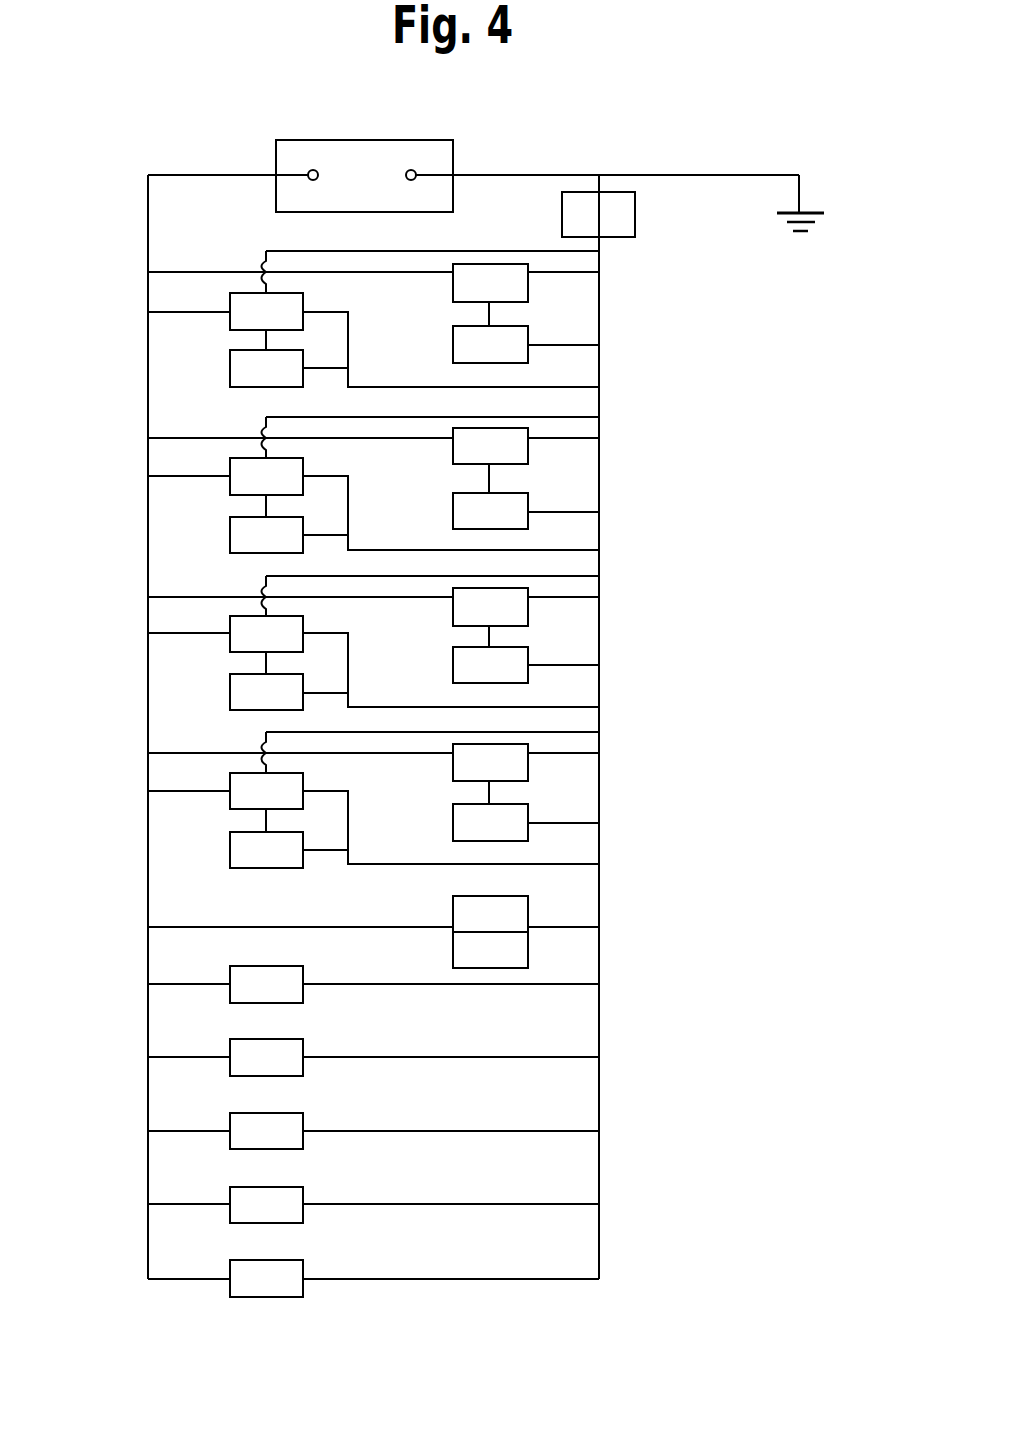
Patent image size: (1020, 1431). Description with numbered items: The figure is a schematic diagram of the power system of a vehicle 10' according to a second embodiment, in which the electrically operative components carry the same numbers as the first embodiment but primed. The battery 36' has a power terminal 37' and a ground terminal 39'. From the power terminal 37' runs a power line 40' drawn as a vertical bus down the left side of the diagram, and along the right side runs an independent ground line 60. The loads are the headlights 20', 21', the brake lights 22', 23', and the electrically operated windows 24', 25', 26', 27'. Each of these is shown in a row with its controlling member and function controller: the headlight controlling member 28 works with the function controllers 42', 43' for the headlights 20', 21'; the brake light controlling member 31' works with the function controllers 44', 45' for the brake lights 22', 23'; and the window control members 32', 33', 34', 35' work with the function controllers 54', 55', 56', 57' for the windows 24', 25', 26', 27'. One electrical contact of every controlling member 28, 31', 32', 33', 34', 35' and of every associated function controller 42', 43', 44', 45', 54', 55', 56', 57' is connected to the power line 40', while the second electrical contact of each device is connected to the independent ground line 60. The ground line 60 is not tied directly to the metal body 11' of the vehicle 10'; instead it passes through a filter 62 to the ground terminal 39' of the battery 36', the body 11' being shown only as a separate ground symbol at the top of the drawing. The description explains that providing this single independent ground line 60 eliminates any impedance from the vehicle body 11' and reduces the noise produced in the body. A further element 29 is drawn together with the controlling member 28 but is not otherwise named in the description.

The vehicle 10' is at (515, 413).
The vehicle body 11' is at (815, 174).
The headlight 20' is at (266, 368).
The headlight 21' is at (490, 344).
The brake light 22' is at (266, 535).
The brake light 23' is at (490, 511).
The electrically operated window 24' is at (266, 692).
The electrically operated window 25' is at (490, 665).
The electrically operated window 26' is at (266, 850).
The electrically operated window 27' is at (490, 822).
The controlling member 28 is at (490, 950).
The switch 29 is at (490, 914).
The brake light controlling member 31' is at (266, 984).
The window control member 32' is at (266, 1057).
The window control member 33' is at (266, 1131).
The window control member 34' is at (266, 1205).
The window control member 35' is at (266, 1278).
The battery 36' is at (364, 176).
The power terminal 37' is at (298, 133).
The ground terminal 39' is at (427, 133).
The power line 40' is at (93, 727).
The function controller 42' is at (266, 311).
The function controller 43' is at (490, 283).
The function controller 44' is at (266, 476).
The function controller 45' is at (490, 446).
The function controller 54' is at (266, 634).
The function controller 55' is at (490, 607).
The function controller 56' is at (266, 791).
The function controller 57' is at (490, 762).
The independent ground line 60 is at (599, 459).
The filter 62 is at (583, 226).